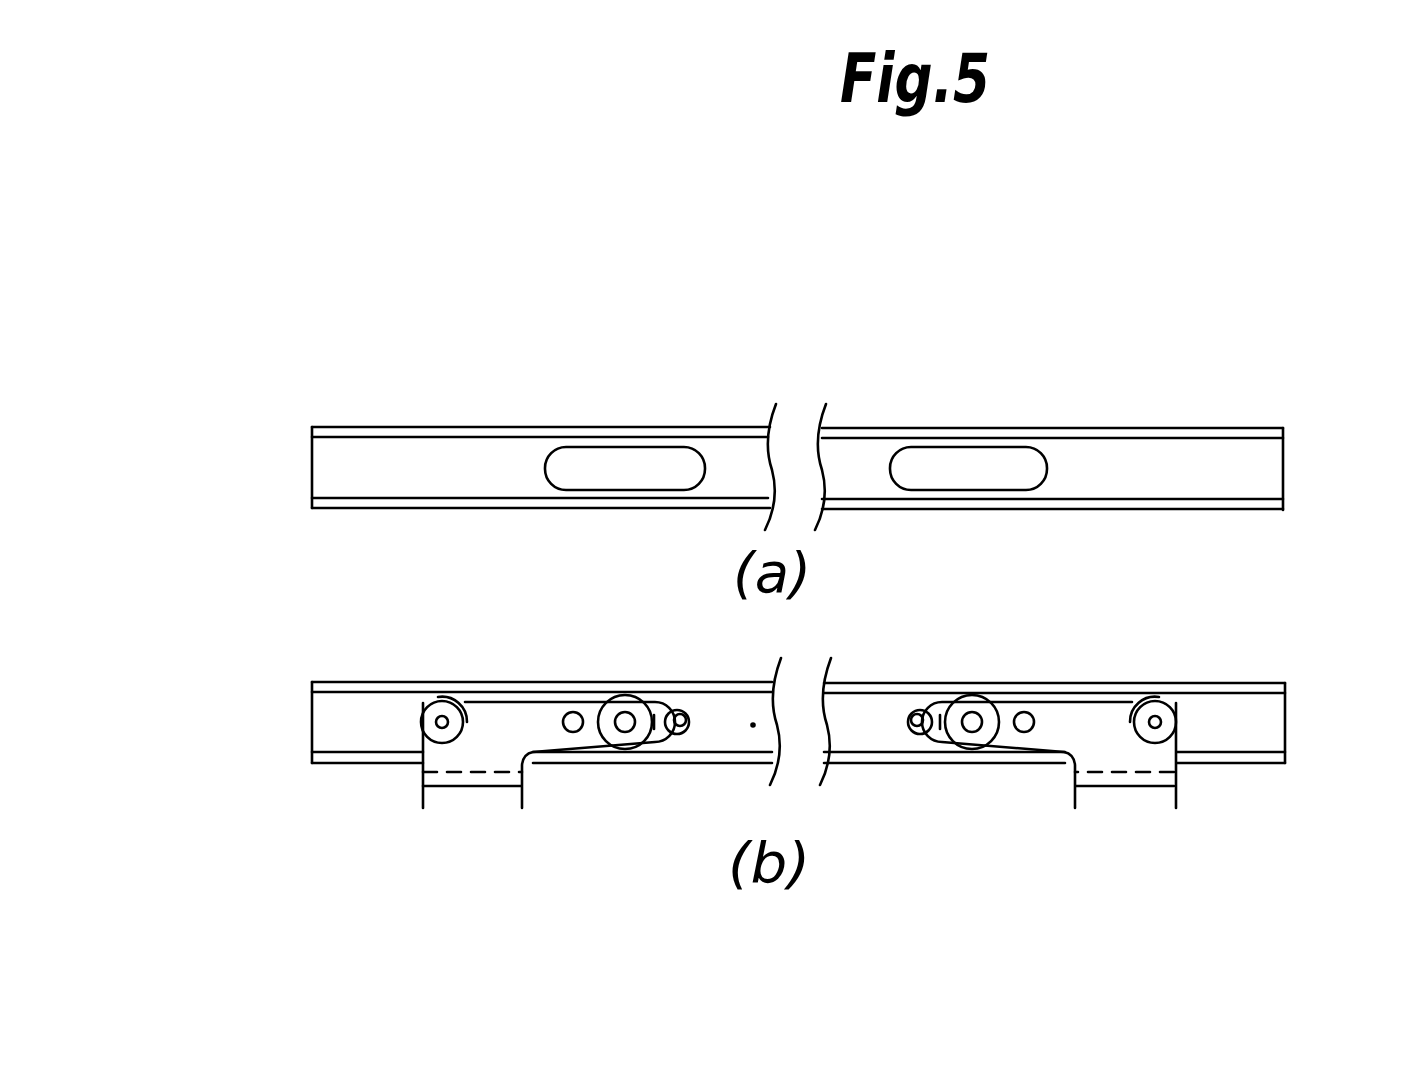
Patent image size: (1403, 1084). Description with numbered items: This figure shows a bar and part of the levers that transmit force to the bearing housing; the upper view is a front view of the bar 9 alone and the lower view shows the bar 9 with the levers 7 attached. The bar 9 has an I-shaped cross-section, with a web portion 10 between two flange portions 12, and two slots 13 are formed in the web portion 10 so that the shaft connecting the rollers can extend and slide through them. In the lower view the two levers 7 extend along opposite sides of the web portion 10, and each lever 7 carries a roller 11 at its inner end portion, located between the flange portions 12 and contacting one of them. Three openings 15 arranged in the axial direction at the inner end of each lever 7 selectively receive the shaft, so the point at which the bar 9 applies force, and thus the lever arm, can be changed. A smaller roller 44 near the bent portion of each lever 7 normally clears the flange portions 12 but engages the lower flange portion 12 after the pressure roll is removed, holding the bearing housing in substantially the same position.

The bar 9 is at (472, 390).
The web portion 10 is at (1260, 473).
The flange portions 12 is at (1080, 430).
The slot 13 is at (612, 465).
The roller 11 is at (608, 702).
The openings 15 is at (672, 732).
The lever 7 is at (542, 735).
The roller 44 is at (420, 706).